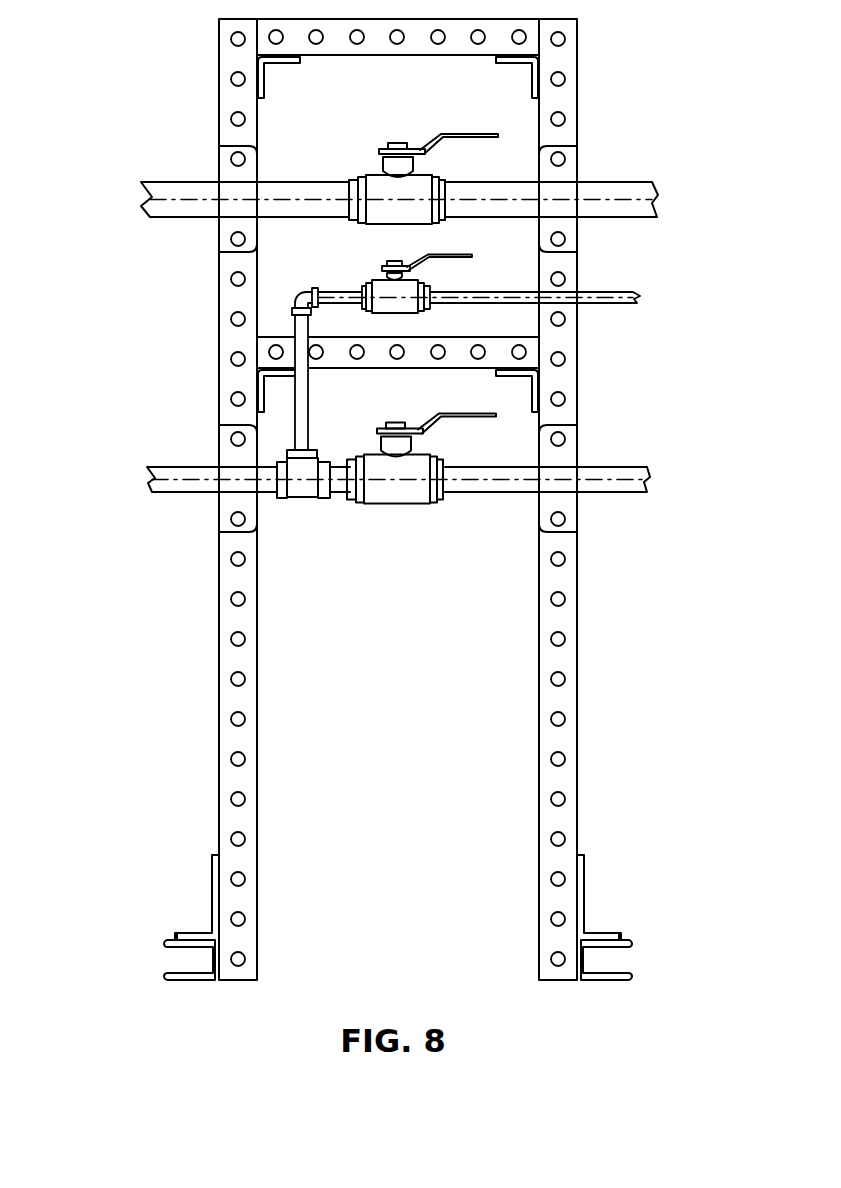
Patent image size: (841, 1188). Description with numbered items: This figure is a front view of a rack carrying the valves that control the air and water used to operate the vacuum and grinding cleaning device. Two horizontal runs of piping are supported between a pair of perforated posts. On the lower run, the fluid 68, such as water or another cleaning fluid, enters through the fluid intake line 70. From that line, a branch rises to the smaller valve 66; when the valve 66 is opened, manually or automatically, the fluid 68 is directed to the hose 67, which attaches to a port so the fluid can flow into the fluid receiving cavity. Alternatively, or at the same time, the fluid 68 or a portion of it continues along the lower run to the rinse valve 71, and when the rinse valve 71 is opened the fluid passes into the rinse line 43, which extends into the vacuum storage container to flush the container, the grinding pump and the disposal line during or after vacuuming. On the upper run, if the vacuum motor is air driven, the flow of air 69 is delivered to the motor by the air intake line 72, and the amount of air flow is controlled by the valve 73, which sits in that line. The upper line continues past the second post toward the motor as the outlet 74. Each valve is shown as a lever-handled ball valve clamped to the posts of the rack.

The rinse line 43 is at (620, 470).
The valve 66 is at (370, 280).
The hose 67 is at (617, 292).
The fluid 68 is at (143, 478).
The air 69 is at (138, 198).
The fluid intake line 70 is at (188, 467).
The rinse valve 71 is at (405, 492).
The air intake line 72 is at (187, 180).
The valve 73 is at (380, 185).
The first outlet pipe 74 is at (617, 183).